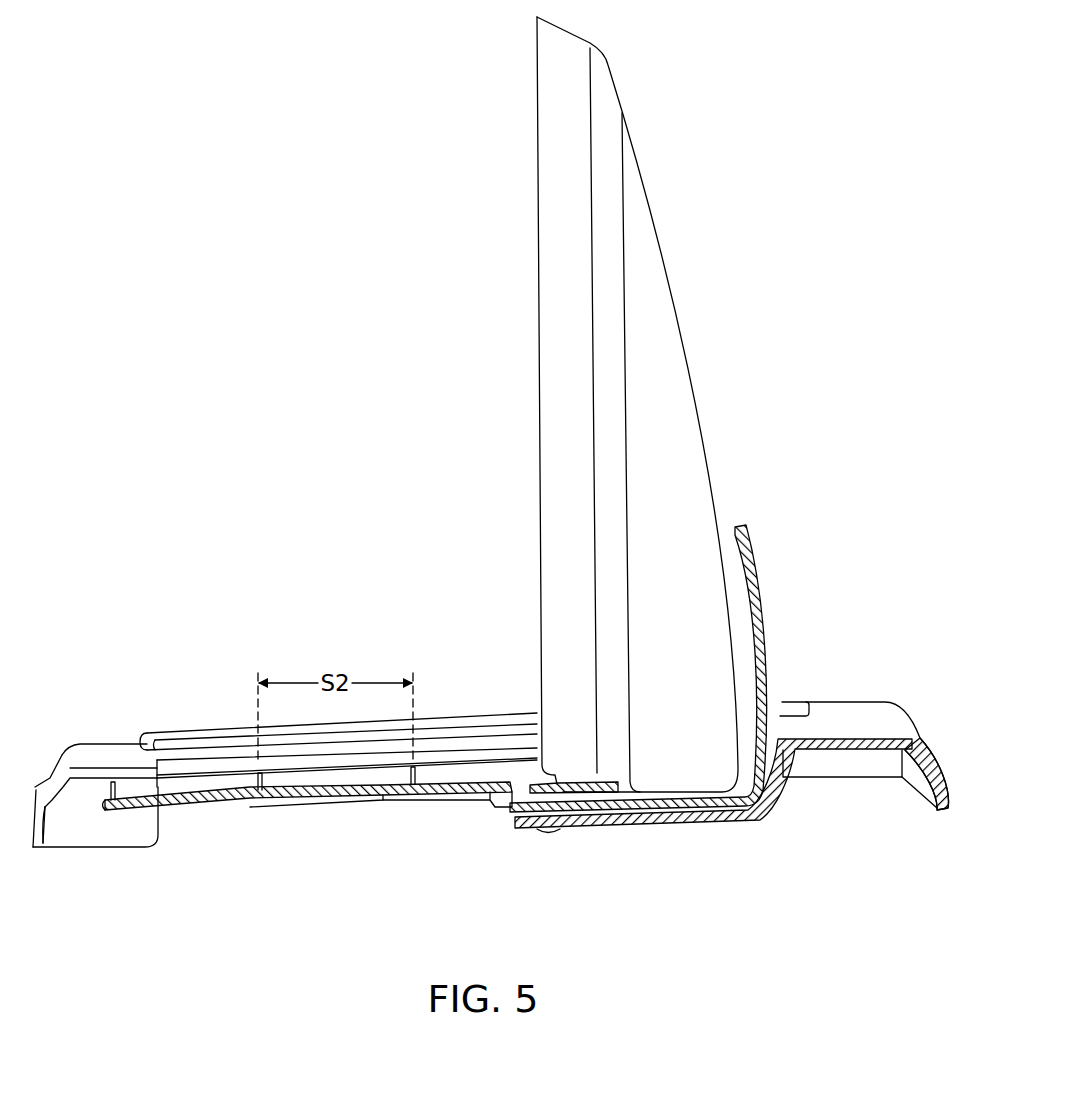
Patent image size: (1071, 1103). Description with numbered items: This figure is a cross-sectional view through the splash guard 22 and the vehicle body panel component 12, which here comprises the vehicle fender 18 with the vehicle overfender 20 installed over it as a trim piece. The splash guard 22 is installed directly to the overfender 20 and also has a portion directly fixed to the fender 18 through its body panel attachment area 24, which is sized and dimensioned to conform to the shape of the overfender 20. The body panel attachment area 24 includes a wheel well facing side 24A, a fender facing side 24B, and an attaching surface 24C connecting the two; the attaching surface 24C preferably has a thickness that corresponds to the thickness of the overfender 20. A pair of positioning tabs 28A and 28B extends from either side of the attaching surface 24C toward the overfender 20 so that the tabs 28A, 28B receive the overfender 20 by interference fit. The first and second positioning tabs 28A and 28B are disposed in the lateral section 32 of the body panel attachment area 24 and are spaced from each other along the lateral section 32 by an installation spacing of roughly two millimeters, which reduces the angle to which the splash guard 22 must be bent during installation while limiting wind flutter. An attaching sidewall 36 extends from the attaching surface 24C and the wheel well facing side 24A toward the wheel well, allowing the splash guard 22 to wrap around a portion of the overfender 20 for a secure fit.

The vehicle body panel component 12 is at (826, 360).
The vehicle fender 18 is at (687, 322).
The vehicle overfender 20 is at (768, 568).
The splash guard 22 is at (862, 827).
The body panel attachment area 24 is at (468, 740).
The wheel well facing side 24A is at (83, 848).
The fender facing side 24B is at (98, 766).
The attaching surface 24C is at (83, 815).
The first positioning tab 28A is at (438, 800).
The second positioning tab 28B is at (200, 765).
The lateral section 32 is at (327, 819).
The attaching sidewall 36 is at (670, 822).